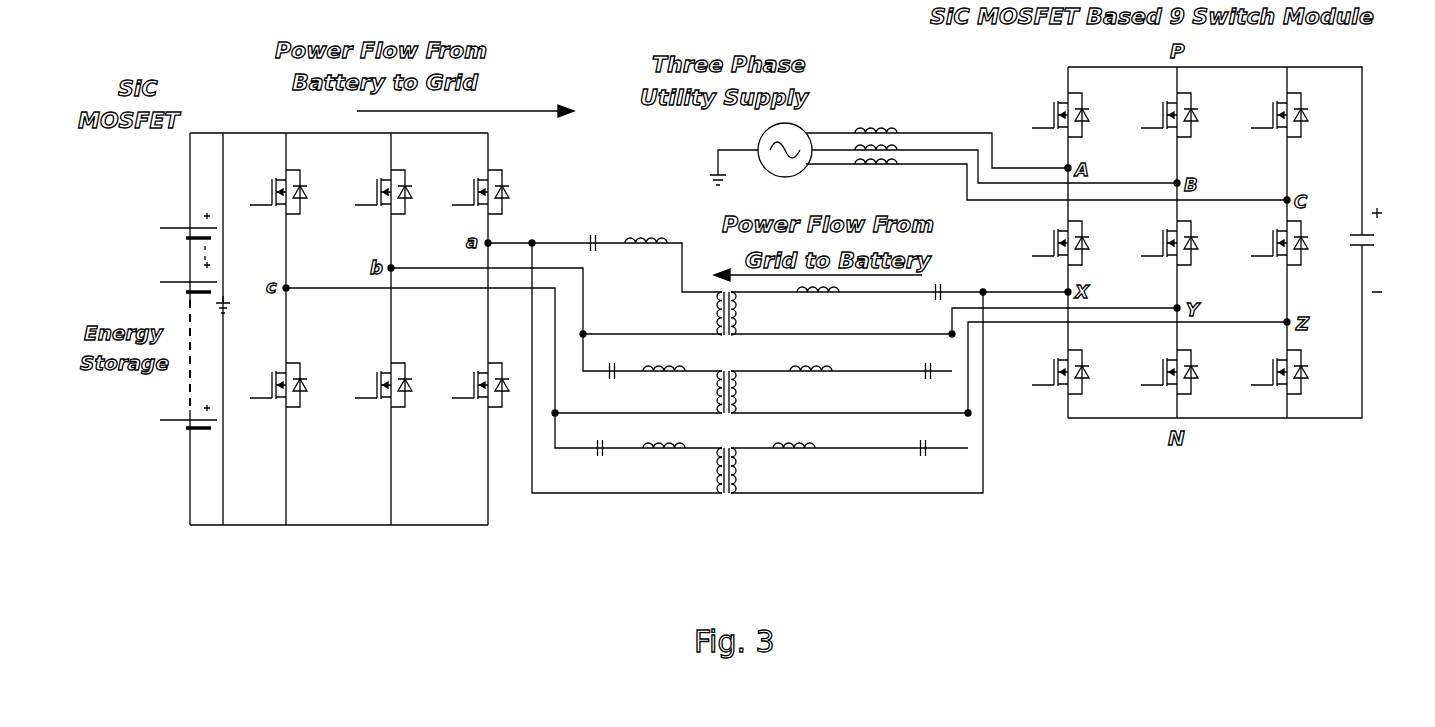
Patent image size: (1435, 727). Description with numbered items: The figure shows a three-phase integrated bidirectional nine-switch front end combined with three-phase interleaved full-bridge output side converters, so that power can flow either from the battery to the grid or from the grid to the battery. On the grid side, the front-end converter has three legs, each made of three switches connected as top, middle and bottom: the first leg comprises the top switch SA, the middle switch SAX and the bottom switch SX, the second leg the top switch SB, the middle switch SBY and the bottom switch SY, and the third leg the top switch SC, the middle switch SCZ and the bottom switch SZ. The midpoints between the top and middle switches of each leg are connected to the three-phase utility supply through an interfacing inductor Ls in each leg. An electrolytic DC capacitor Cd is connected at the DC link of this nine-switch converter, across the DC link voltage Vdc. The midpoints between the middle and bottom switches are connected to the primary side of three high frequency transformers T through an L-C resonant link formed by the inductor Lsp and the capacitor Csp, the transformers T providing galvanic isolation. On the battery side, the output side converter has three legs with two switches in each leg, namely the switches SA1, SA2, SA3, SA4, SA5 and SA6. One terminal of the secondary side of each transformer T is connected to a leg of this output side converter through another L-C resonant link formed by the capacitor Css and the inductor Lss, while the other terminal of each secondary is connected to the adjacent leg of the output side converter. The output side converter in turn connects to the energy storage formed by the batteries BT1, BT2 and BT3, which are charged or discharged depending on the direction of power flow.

The battery BT1 is at (163, 240).
The battery BT2 is at (163, 293).
The battery BT3 is at (163, 424).
The output side converter switch SA1 is at (469, 192).
The output side converter switch SA2 is at (469, 385).
The output side converter switch SA3 is at (372, 192).
The output side converter switch SA4 is at (372, 385).
The output side converter switch SA5 is at (268, 192).
The output side converter switch SA6 is at (268, 385).
The resonant link capacitor Css is at (595, 343).
The resonant link inductor Lss is at (655, 343).
The high frequency transformer T is at (971, 435).
The resonant link inductor Lsp is at (806, 367).
The resonant link capacitor Csp is at (919, 370).
The interfacing inductor Ls is at (876, 134).
The electrolytic DC capacitor Cd is at (1350, 245).
The DC link voltage Vdc is at (1383, 250).
The top switch SA is at (1053, 115).
The top switch SB is at (1163, 115).
The top switch SC is at (1273, 115).
The middle switch SAX is at (1048, 243).
The middle switch SBY is at (1158, 243).
The middle switch SCZ is at (1268, 243).
The bottom switch SX is at (1053, 372).
The bottom switch SY is at (1163, 372).
The bottom switch SZ is at (1273, 372).